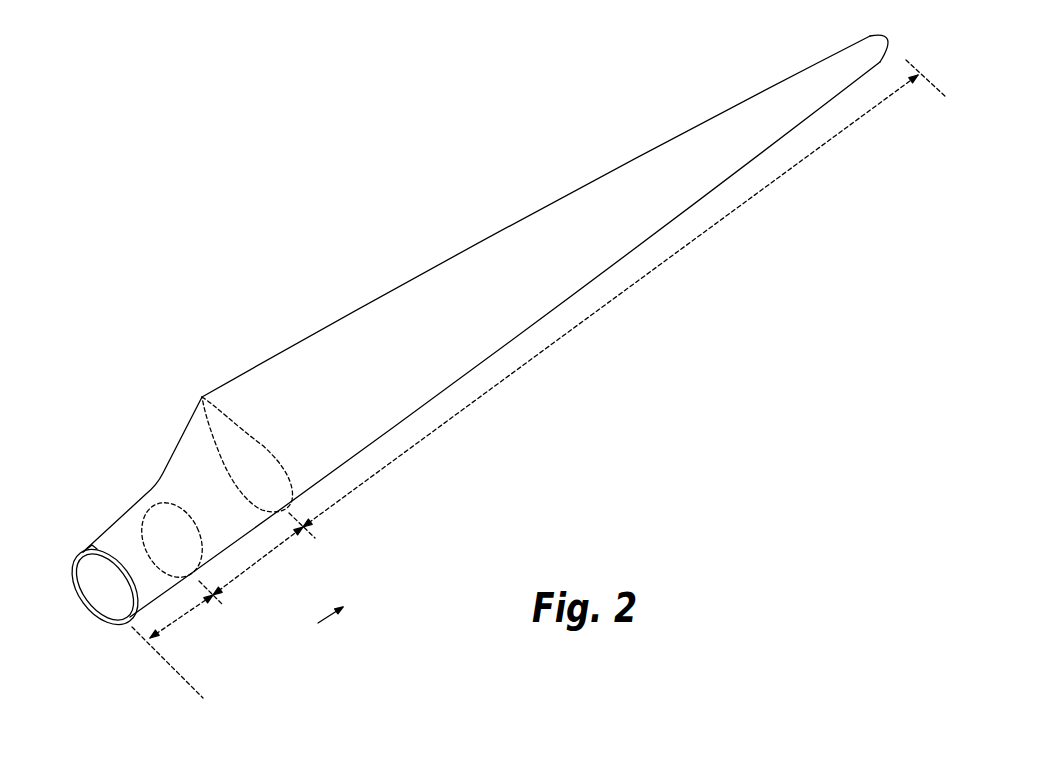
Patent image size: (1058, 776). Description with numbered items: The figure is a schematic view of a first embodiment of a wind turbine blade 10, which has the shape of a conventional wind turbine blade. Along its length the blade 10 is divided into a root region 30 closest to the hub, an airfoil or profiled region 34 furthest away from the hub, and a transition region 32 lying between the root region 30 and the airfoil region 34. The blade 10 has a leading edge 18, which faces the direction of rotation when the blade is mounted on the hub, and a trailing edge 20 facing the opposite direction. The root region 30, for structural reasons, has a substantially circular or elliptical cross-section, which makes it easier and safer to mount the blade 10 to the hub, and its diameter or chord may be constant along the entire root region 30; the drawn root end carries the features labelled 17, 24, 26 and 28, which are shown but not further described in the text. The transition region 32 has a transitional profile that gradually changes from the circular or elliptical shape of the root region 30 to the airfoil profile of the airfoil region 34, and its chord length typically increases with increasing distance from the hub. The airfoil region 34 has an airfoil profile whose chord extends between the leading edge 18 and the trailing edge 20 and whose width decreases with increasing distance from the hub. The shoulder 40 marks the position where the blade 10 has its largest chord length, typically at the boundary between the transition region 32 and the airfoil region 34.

The wind turbine blade 10 is at (501, 369).
The root end 17 is at (100, 582).
The leading edge 18 is at (640, 242).
The trailing edge 20 is at (535, 213).
The root section 24 is at (103, 546).
The root end face 26 is at (108, 622).
The root flange ring 28 is at (89, 547).
The root region 30 is at (185, 612).
The transition region 32 is at (263, 553).
The airfoil region 34 is at (553, 343).
The shoulder 40 is at (202, 397).